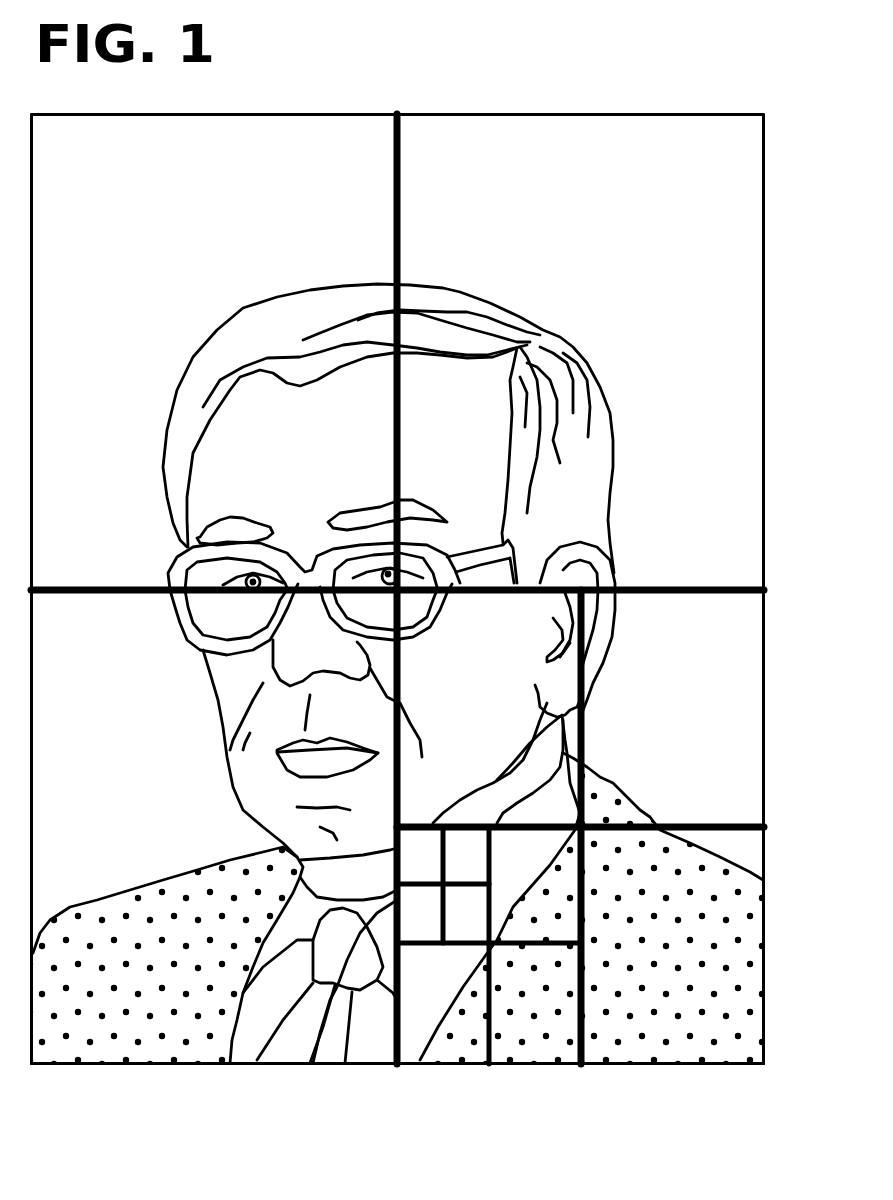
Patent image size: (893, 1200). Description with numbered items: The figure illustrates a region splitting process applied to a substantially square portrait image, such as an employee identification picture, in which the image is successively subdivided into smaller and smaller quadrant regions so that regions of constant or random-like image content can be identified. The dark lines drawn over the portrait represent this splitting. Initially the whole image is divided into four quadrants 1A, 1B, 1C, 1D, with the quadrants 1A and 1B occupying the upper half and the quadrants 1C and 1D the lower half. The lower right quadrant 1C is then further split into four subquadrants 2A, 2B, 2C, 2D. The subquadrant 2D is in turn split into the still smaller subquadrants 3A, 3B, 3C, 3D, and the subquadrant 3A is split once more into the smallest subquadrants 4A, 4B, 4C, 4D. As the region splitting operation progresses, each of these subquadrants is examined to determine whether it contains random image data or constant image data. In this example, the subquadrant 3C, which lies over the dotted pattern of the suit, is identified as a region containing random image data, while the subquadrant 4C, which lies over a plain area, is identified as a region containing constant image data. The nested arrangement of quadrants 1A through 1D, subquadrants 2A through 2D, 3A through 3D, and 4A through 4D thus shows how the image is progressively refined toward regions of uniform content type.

The quadrant 1A is at (213, 299).
The quadrant 1B is at (598, 299).
The quadrant 1C is at (752, 800).
The quadrant 1D is at (205, 826).
The subquadrant 2A is at (505, 714).
The subquadrant 2B is at (688, 714).
The subquadrant 2C is at (688, 963).
The subquadrant 2D is at (393, 1033).
The subquadrant 3A is at (320, 1063).
The subquadrant 3B is at (551, 899).
The subquadrant 3C is at (552, 1018).
The subquadrant 3D is at (460, 1018).
The subquadrant 4A is at (435, 871).
The subquadrant 4B is at (480, 871).
The subquadrant 4C is at (480, 933).
The subquadrant 4D is at (435, 933).